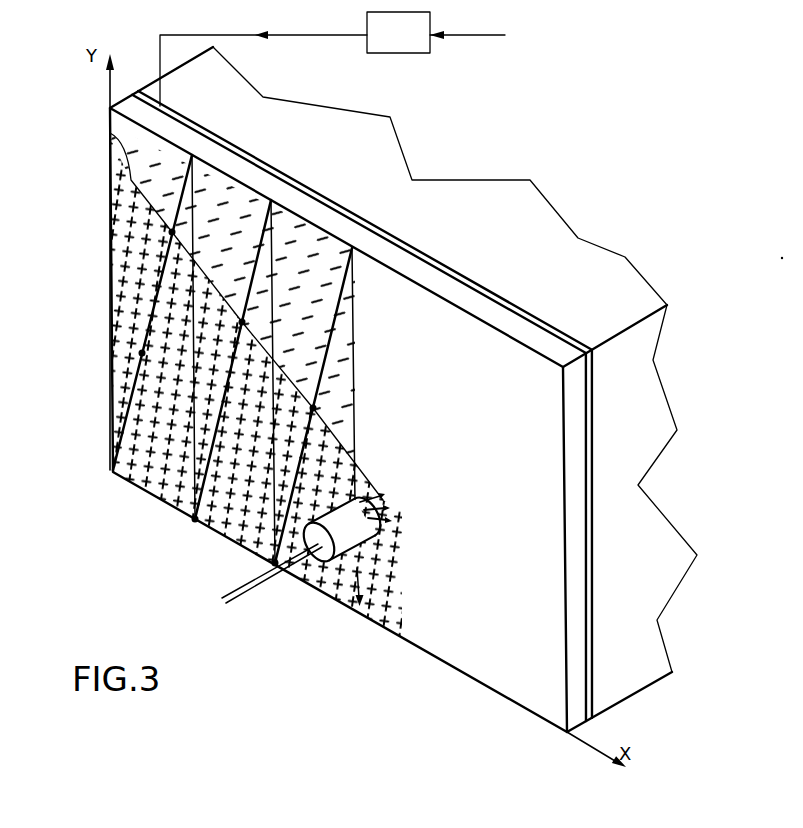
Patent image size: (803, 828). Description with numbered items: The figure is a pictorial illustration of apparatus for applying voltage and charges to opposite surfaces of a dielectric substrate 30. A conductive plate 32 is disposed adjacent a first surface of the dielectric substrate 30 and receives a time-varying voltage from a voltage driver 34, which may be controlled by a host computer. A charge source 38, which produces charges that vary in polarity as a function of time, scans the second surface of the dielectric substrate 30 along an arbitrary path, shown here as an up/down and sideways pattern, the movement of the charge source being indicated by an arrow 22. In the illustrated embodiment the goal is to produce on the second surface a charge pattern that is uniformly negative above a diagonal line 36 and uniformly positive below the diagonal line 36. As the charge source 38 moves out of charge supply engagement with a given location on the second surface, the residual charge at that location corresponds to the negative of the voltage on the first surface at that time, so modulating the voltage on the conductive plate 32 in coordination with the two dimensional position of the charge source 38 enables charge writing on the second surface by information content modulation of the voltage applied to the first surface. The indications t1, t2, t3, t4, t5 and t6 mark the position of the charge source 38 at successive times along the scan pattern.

The arrow 22 is at (696, 0).
The dielectric substrate 30 is at (487, 306).
The conductive plate 32 is at (478, 283).
The voltage driver 34 is at (417, 54).
The diagonal line 36 is at (110, 133).
The charge source 38 is at (347, 560).
The time indication t1 is at (142, 353).
The time indication t2 is at (172, 232).
The time indication t3 is at (195, 519).
The time indication t4 is at (242, 322).
The time indication t5 is at (275, 563).
The time indication t6 is at (313, 408).